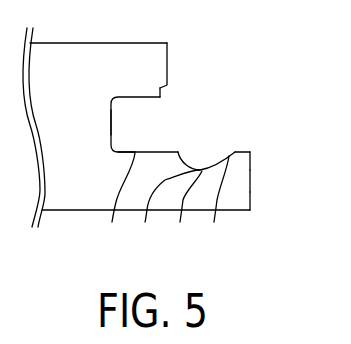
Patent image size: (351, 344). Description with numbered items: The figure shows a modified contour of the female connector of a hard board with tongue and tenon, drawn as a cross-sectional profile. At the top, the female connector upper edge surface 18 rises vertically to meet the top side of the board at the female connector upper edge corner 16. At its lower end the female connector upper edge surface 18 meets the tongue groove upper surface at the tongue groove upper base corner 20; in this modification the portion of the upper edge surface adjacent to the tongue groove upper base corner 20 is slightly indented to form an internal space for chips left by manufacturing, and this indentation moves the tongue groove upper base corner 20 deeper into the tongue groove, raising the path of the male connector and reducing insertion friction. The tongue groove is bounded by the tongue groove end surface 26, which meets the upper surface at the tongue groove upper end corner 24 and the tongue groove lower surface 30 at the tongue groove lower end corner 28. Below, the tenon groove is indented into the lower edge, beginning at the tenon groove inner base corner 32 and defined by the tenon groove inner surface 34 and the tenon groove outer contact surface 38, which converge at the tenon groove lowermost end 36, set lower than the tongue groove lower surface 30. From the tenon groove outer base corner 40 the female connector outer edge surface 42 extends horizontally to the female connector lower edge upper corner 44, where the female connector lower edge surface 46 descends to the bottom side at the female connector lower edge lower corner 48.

The female connector upper edge corner 16 is at (170, 43).
The female connector upper edge surface 18 is at (168, 83).
The tongue groove upper base corner 20 is at (160, 87).
The tongue groove upper end corner 24 is at (110, 97).
The tongue groove end surface 26 is at (110, 123).
The tongue groove lower end corner 28 is at (112, 150).
The tongue groove lower surface 30 is at (119, 206).
The tenon groove inner base corner 32 is at (178, 152).
The tenon groove inner surface 34 is at (166, 215).
The tenon groove lowermost end 36 is at (186, 216).
The tenon groove outer contact surface 38 is at (217, 209).
The tenon groove outer base corner 40 is at (237, 152).
The female connector outer edge surface 42 is at (238, 152).
The female connector lower edge upper corner 44 is at (250, 152).
The female connector lower edge surface 46 is at (250, 181).
The female connector lower edge lower corner 48 is at (250, 208).